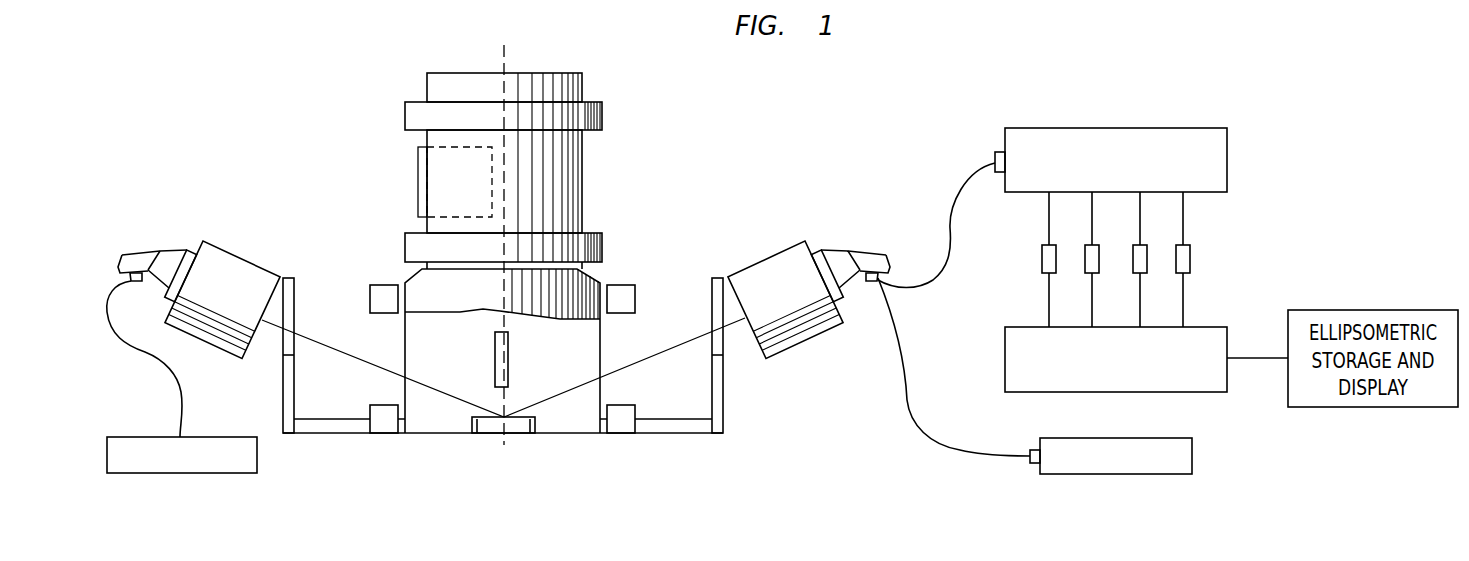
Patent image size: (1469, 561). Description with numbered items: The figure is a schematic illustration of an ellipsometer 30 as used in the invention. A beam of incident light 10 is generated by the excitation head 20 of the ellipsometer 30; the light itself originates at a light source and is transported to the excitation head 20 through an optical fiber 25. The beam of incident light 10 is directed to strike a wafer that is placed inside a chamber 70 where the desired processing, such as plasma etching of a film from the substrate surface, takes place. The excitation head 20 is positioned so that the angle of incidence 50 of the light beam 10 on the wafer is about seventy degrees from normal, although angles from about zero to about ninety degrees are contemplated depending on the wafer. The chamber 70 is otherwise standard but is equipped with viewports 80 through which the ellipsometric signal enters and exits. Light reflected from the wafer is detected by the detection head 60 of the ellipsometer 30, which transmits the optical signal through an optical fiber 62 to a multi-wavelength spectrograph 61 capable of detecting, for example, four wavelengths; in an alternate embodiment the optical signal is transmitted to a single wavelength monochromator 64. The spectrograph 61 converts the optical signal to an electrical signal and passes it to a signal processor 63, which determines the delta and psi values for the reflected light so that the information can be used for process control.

The beam of incident light 10 is at (317, 340).
The excitation head 20 is at (248, 262).
The optical fiber 25 is at (185, 407).
The ellipsometer 30 is at (155, 386).
The angle of incidence 50 is at (478, 398).
The detection head 60 is at (805, 242).
The multi-wavelength spectrograph 61 is at (1230, 135).
The optical fiber 62 is at (952, 238).
The signal processor 63 is at (1230, 333).
The single wavelength monochromator 64 is at (1193, 442).
The chamber 70 is at (598, 280).
The viewports 80 is at (597, 350).